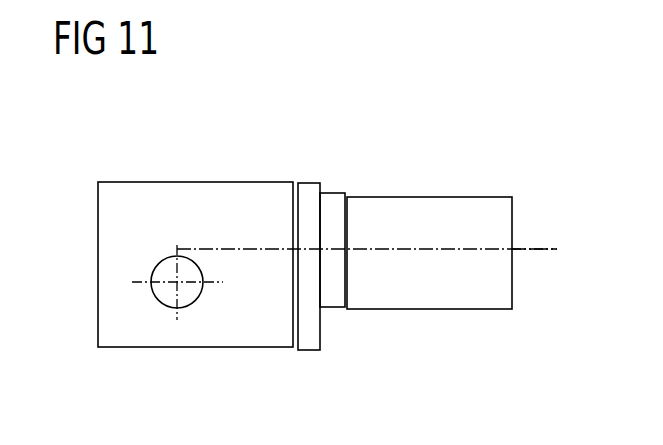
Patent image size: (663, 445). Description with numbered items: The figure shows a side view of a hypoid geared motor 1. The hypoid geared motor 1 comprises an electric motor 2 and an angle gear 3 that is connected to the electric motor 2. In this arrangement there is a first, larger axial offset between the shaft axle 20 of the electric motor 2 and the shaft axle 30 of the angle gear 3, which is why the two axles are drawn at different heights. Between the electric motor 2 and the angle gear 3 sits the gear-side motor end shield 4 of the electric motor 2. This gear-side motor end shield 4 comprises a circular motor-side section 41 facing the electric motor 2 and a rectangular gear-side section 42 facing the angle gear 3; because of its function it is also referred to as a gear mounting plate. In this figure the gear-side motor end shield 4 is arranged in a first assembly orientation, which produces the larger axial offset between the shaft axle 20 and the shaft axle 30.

The hypoid geared motor 1 is at (229, 150).
The electric motor 2 is at (430, 196).
The angle gear 3 is at (98, 260).
The gear-side motor end shield 4 is at (322, 209).
The shaft axle of the electric motor 20 is at (545, 250).
The shaft axle of the angle gear 30 is at (198, 293).
The circular motor-side section 41 is at (332, 192).
The rectangular gear-side section 42 is at (318, 182).